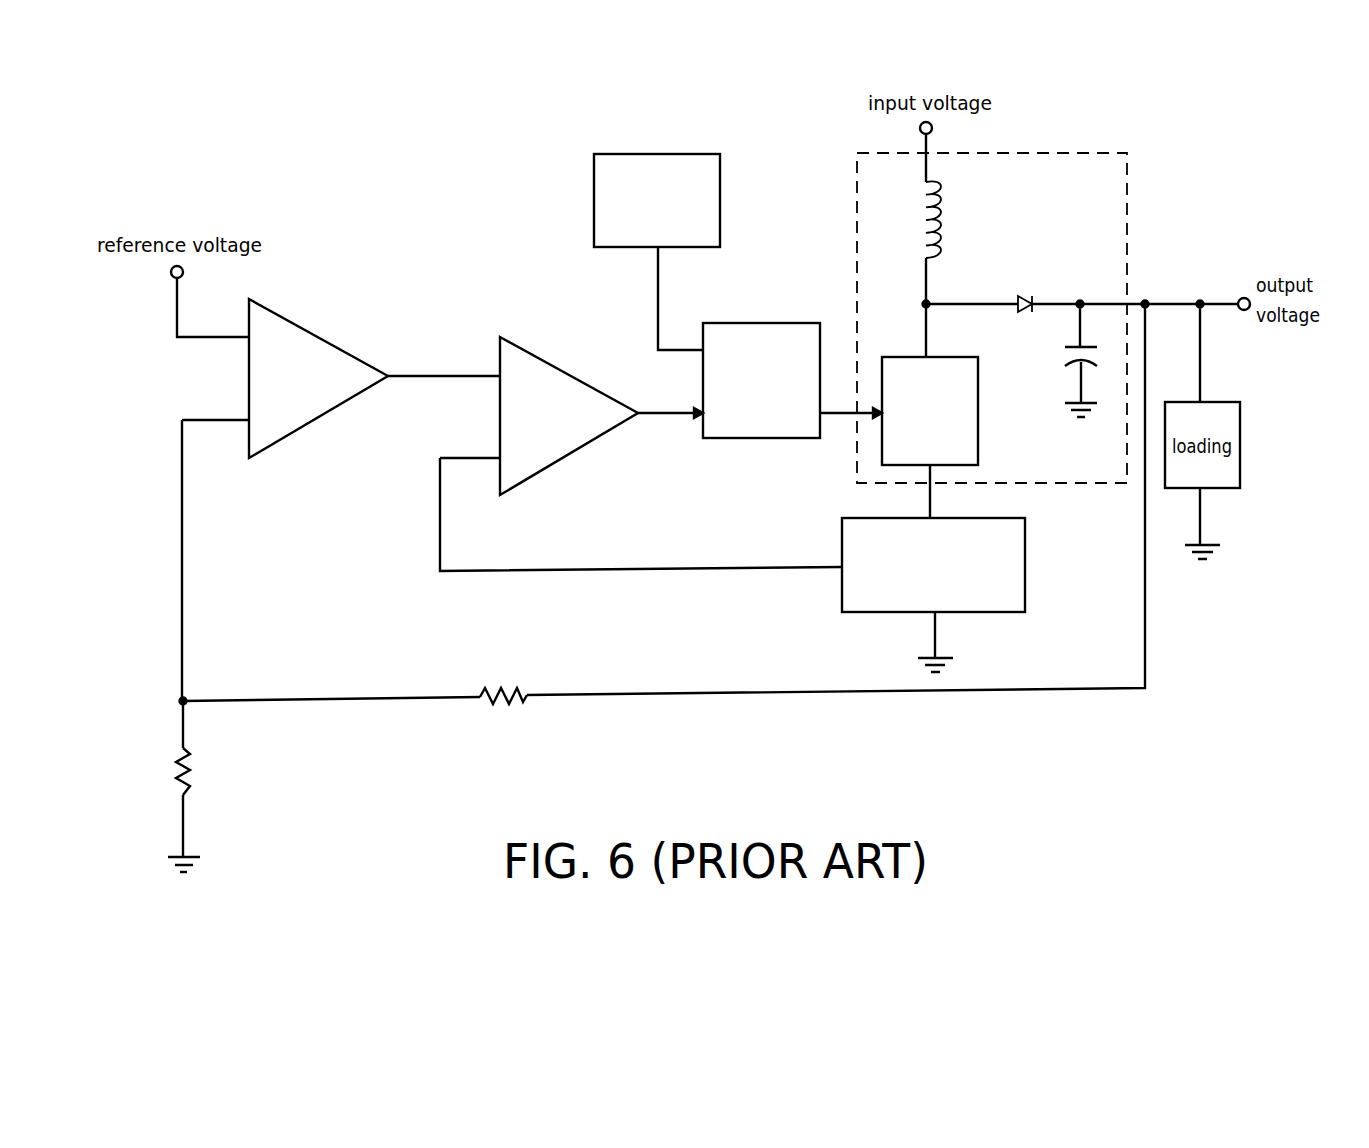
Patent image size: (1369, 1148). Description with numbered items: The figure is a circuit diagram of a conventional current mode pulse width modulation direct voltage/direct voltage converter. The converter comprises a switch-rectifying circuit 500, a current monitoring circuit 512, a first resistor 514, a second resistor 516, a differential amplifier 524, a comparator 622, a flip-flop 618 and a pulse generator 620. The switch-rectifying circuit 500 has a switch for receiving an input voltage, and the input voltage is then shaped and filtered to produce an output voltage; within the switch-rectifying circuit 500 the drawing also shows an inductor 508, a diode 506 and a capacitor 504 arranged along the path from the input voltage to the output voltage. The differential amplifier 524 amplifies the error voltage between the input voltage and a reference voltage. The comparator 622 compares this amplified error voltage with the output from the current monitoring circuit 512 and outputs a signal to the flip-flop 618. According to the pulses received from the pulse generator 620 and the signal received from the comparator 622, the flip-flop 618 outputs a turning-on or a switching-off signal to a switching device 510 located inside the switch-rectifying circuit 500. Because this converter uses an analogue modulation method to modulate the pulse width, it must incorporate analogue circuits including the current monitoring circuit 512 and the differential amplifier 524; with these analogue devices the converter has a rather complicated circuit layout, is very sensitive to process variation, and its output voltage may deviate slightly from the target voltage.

The switch-rectifying circuit 500 is at (1127, 153).
The capacitor 504 is at (1088, 322).
The diode 506 is at (1022, 298).
The inductor 508 is at (940, 223).
The switching device 510 is at (978, 408).
The current monitoring circuit 512 is at (1025, 563).
The first resistor 514 is at (512, 708).
The second resistor 516 is at (193, 775).
The differential amplifier 524 is at (320, 337).
The flip-flop 618 is at (772, 323).
The pulse generator 620 is at (720, 197).
The comparator 622 is at (572, 372).